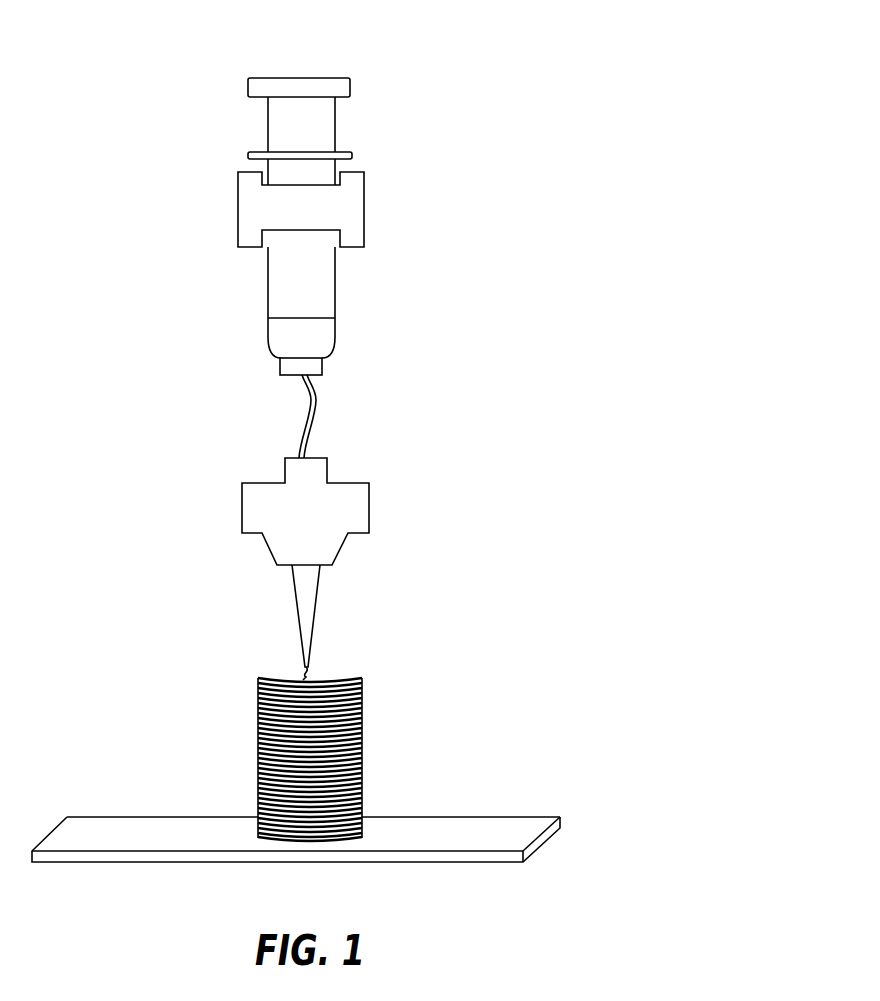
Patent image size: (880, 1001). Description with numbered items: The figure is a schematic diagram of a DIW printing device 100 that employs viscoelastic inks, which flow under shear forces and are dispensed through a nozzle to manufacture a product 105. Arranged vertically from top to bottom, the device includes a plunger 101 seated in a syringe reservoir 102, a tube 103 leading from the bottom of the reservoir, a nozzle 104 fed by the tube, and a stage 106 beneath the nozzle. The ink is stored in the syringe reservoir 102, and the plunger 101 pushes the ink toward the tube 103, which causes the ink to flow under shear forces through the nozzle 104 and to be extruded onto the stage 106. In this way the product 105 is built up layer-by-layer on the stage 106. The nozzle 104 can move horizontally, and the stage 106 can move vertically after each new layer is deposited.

The DIW printing device 100 is at (363, 31).
The plunger 101 is at (319, 131).
The syringe reservoir 102 is at (313, 273).
The tube 103 is at (326, 416).
The nozzle 104 is at (305, 569).
The product 105 is at (334, 759).
The stage 106 is at (296, 825).